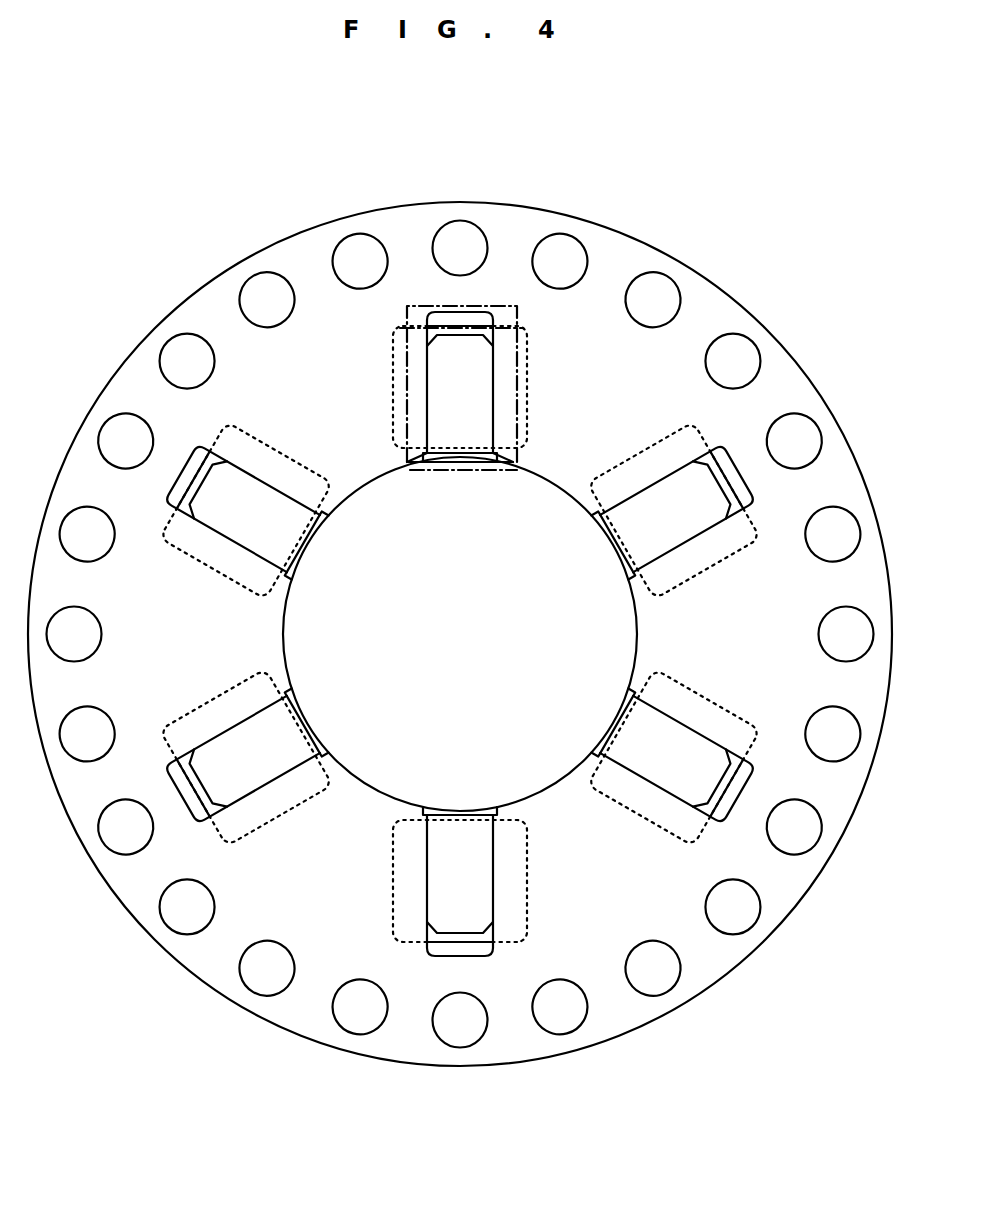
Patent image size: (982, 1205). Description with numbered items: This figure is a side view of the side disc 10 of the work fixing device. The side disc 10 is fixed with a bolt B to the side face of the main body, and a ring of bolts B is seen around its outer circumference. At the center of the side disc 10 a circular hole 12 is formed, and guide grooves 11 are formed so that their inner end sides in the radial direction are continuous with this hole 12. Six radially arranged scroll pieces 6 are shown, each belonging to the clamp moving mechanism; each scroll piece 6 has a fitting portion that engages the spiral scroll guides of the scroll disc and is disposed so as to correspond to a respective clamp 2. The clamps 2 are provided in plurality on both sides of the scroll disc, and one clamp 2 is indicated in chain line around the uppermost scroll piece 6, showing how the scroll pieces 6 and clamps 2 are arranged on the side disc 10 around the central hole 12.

The clamp 2 is at (420, 317).
The bolt B is at (573, 263).
The side disc 10 is at (630, 236).
The scroll piece 6 is at (470, 372).
The guide groove 11 is at (473, 443).
The circular hole 12 is at (368, 787).